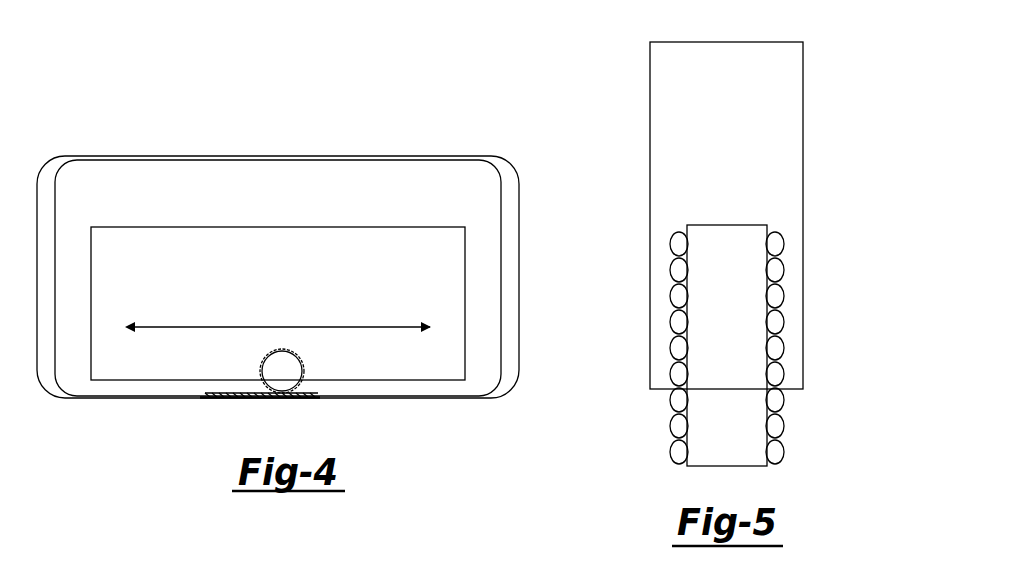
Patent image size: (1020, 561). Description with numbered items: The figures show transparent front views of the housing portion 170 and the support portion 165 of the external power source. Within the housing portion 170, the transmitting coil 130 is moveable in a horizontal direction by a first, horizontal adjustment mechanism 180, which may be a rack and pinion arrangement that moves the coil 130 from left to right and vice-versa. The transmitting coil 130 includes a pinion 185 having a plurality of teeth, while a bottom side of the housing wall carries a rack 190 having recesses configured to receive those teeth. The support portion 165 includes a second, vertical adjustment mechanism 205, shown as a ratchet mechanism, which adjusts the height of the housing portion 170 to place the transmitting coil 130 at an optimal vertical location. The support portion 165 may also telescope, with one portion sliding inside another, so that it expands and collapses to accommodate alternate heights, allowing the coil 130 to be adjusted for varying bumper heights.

In FIG. 4, the transmitting coil 130 is at (418, 268).
In FIG. 5, the support portion 165 is at (665, 72).
In FIG. 4, the housing portion 170 is at (523, 199).
In FIG. 4, the horizontal adjustment mechanism 180 is at (335, 406).
In FIG. 4, the pinion 185 is at (281, 371).
In FIG. 4, the rack 190 is at (230, 398).
In FIG. 5, the vertical adjustment mechanism 205 is at (663, 393).